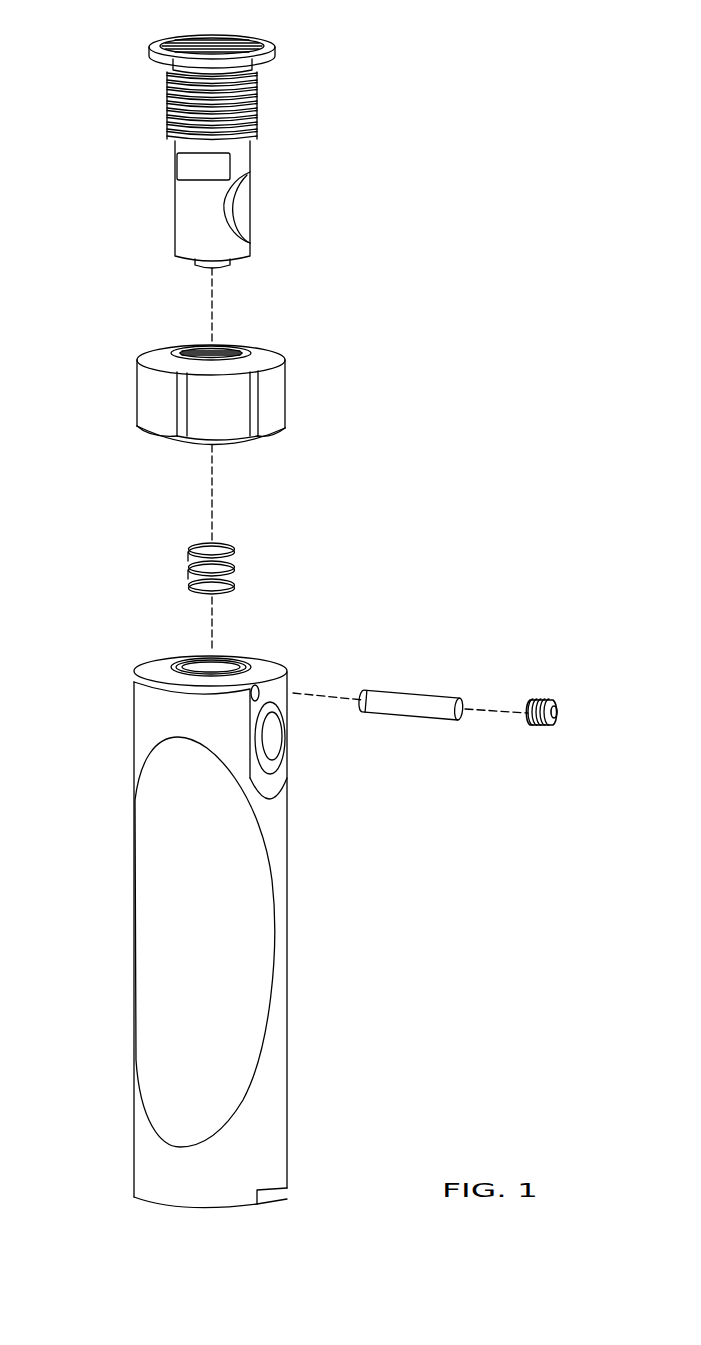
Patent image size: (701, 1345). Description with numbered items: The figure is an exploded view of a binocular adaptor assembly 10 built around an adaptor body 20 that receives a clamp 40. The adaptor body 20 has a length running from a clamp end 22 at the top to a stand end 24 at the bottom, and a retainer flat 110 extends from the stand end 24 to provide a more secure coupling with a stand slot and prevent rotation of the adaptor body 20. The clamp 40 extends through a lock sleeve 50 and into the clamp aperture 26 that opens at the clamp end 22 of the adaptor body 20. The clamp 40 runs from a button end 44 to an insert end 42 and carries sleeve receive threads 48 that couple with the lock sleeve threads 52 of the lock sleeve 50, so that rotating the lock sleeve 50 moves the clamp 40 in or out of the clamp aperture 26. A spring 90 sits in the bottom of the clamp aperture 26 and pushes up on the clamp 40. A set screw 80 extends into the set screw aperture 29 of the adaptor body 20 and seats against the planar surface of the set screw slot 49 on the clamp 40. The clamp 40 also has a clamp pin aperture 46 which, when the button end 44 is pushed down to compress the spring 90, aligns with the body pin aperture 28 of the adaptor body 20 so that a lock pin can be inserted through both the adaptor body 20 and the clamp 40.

The binocular adaptor assembly 10 is at (478, 152).
The adaptor body 20 is at (258, 988).
The clamp end 22 is at (155, 668).
The stand end 24 is at (163, 1205).
The clamp aperture 26 is at (227, 668).
The body pin aperture 28 is at (290, 743).
The set screw aperture 29 is at (259, 692).
The clamp 40 is at (238, 162).
The insert end 42 is at (220, 265).
The button end 44 is at (238, 37).
The clamp pin aperture 46 is at (233, 203).
The sleeve receive threads 48 is at (255, 88).
The set screw slot 49 is at (190, 167).
The lock sleeve 50 is at (268, 393).
The lock sleeve threads 52 is at (230, 350).
The set screw 80 is at (430, 700).
The spring 90 is at (233, 553).
The retainer flat 110 is at (277, 1193).